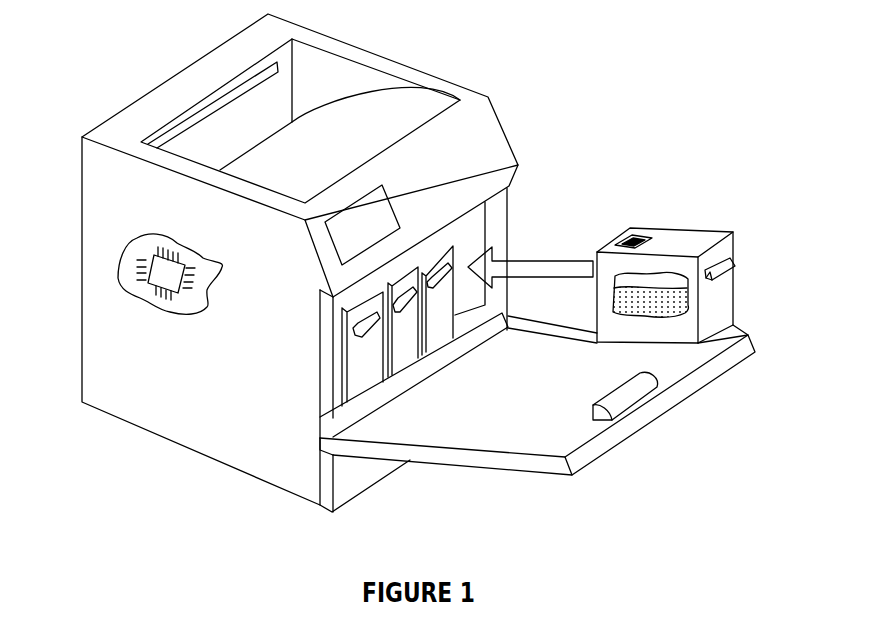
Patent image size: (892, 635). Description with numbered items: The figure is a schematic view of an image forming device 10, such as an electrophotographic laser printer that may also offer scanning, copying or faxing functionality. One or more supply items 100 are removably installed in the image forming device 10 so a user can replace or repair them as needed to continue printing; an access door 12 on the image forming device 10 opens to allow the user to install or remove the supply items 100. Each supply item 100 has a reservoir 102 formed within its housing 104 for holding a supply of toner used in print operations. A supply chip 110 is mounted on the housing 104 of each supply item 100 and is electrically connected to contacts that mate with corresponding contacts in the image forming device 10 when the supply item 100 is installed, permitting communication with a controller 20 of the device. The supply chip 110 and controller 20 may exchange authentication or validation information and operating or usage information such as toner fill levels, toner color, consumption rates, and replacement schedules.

The image forming device 10 is at (497, 60).
The access door 12 is at (667, 400).
The controller 20 is at (167, 277).
The supply item 100 is at (362, 370).
The reservoir 102 is at (642, 302).
The housing 104 is at (718, 313).
The supply chip 110 is at (635, 241).